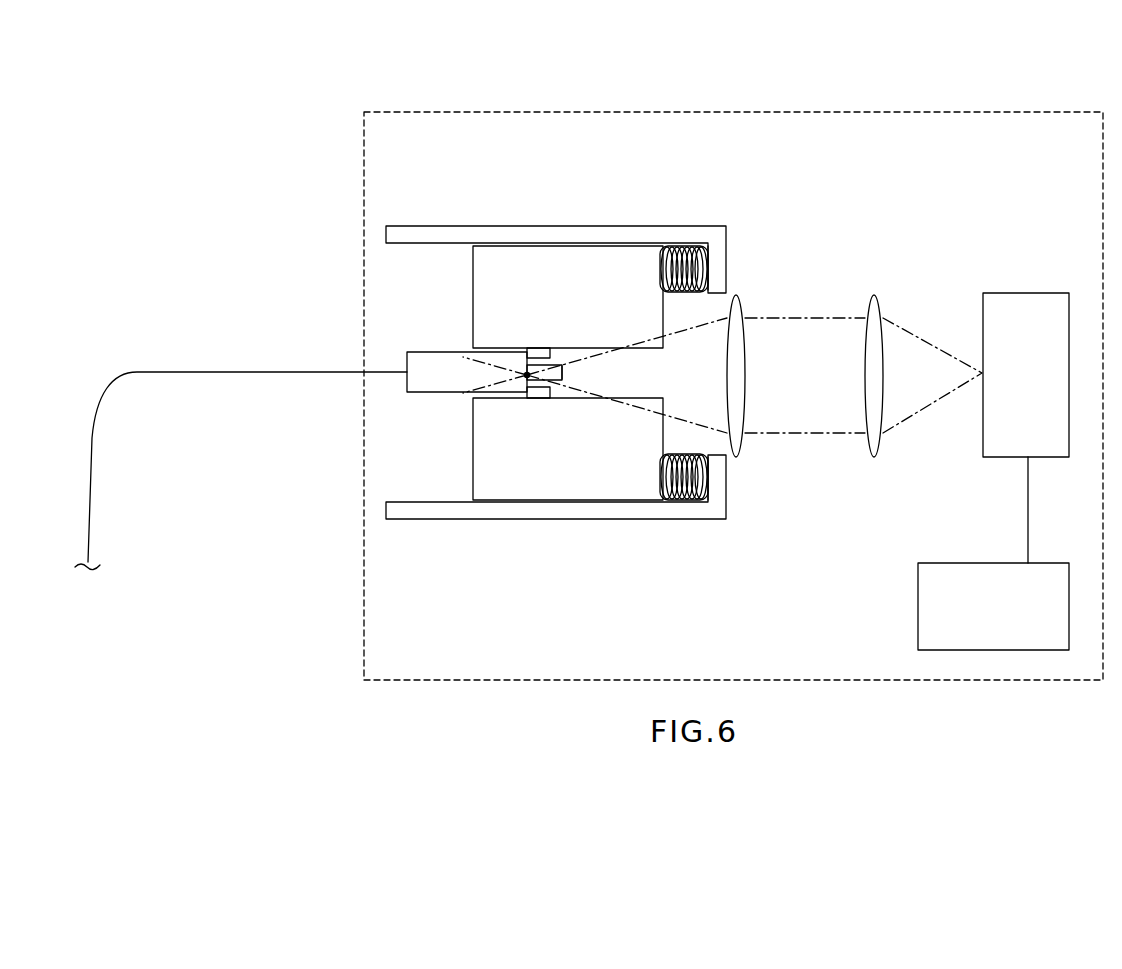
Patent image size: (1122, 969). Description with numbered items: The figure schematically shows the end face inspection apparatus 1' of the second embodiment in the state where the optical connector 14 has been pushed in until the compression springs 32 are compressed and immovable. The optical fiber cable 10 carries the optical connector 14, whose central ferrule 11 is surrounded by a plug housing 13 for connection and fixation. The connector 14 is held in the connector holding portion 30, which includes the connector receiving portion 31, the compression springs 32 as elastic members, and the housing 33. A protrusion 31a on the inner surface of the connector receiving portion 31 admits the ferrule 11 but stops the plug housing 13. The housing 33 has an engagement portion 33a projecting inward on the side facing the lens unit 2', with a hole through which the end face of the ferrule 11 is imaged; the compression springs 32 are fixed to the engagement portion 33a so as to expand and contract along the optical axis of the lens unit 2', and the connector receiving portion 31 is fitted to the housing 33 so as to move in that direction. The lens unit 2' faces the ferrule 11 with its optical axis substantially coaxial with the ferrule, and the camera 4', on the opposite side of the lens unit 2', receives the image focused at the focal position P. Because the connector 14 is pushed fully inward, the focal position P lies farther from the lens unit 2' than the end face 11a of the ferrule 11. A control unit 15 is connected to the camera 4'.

The end face inspection apparatus 1' is at (589, 350).
The lens unit 2' is at (722, 312).
The camera 4' is at (1026, 344).
The optical fiber cable 10 is at (247, 348).
The ferrule 11 is at (606, 336).
The end face of the ferrule 11a is at (563, 372).
The plug housing 13 is at (443, 393).
The optical connector 14 is at (460, 369).
The control unit 15 is at (918, 605).
The connector holding portion 30 is at (598, 355).
The connector receiving portion 31 is at (568, 372).
The protrusion 31a is at (561, 348).
The compression springs 32 is at (707, 248).
The housing 33 is at (598, 375).
The engagement portion 33a is at (717, 267).
The focal position P is at (524, 381).